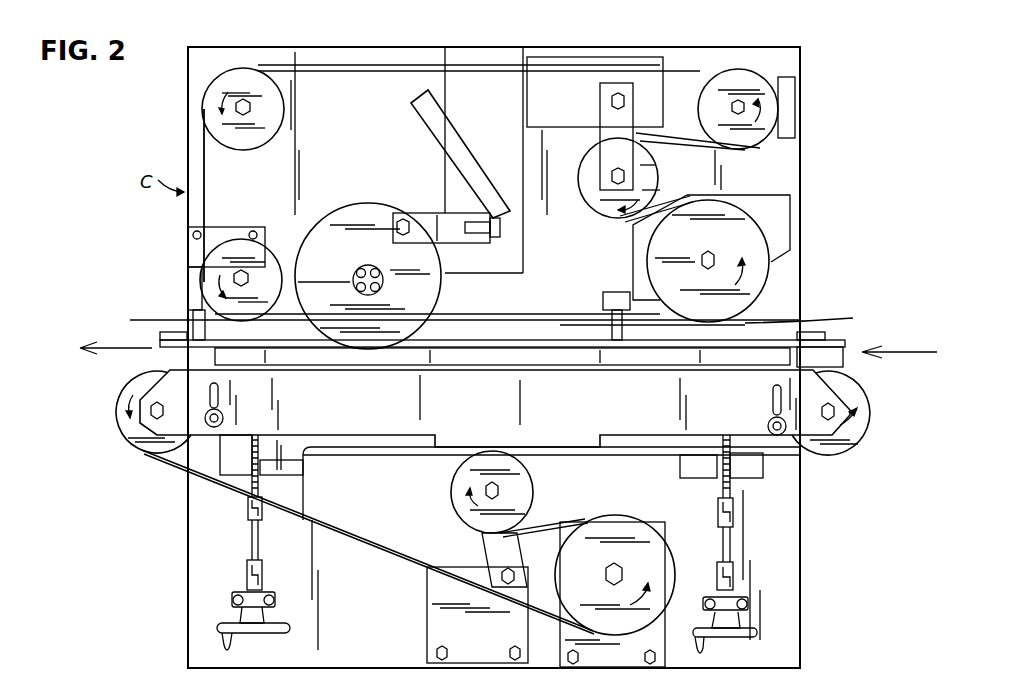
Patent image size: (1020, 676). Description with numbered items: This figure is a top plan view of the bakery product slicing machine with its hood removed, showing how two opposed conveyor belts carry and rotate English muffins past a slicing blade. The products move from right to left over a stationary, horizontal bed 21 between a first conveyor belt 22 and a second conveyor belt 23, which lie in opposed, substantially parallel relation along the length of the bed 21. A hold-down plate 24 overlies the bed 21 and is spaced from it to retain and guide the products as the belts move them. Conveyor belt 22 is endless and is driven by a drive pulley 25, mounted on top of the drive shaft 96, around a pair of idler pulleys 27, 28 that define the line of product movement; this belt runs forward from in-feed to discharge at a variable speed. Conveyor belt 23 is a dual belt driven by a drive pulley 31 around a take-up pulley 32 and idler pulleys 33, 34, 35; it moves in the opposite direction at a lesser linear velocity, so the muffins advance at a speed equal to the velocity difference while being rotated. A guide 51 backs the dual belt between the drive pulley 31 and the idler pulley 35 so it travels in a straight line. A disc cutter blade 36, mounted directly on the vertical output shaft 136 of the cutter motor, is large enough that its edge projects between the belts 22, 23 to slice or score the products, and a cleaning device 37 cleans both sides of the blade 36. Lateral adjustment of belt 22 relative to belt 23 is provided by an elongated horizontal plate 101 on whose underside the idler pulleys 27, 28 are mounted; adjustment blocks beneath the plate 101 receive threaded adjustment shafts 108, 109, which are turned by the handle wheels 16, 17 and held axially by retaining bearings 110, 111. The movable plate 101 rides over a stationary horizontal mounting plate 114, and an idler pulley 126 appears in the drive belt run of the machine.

The handle wheel 16 is at (268, 633).
The handle wheel 17 is at (725, 640).
The bed 21 is at (203, 358).
The first conveyor belt 22 is at (178, 466).
The second conveyor belt 23 is at (204, 143).
The hold-down plate 24 is at (296, 357).
The drive pulley 25 is at (625, 591).
The idler pulley 27 is at (846, 421).
The idler pulley 28 is at (116, 395).
The drive pulley 31 is at (767, 252).
The take-up pulley 32 is at (595, 148).
The idler pulley 33 is at (779, 108).
The idler pulley 34 is at (254, 68).
The idler pulley 35 is at (265, 252).
The disc cutter blade 36 is at (368, 261).
The cleaning device 37 is at (426, 184).
The guide 51 is at (480, 318).
The drive shaft 96 is at (610, 575).
The elongated horizontal plate 101 is at (838, 442).
The threaded adjustment shaft 108 is at (300, 464).
The threaded adjustment shaft 109 is at (734, 492).
The retaining bearing 110 is at (270, 604).
The retaining bearing 111 is at (742, 600).
The stationary horizontal mounting plate 114 is at (414, 447).
The idler pulley 126 is at (522, 490).
The output shaft 136 is at (361, 274).